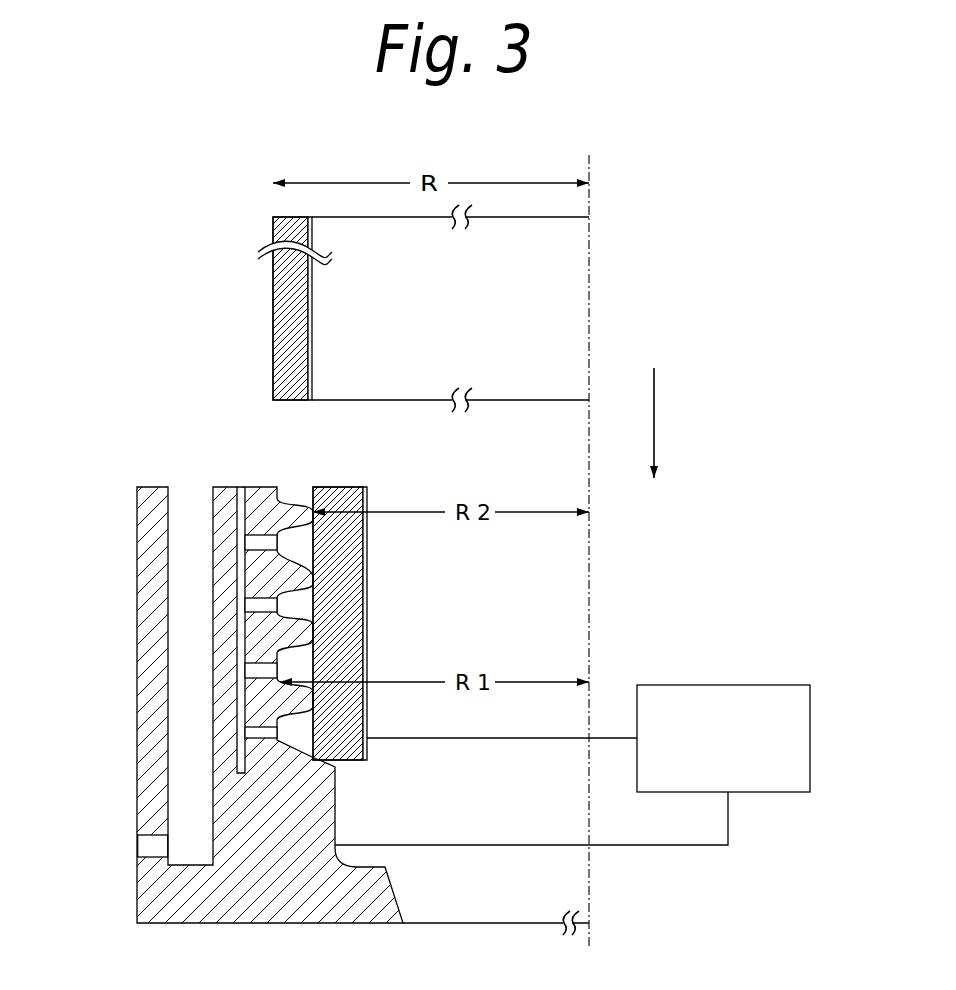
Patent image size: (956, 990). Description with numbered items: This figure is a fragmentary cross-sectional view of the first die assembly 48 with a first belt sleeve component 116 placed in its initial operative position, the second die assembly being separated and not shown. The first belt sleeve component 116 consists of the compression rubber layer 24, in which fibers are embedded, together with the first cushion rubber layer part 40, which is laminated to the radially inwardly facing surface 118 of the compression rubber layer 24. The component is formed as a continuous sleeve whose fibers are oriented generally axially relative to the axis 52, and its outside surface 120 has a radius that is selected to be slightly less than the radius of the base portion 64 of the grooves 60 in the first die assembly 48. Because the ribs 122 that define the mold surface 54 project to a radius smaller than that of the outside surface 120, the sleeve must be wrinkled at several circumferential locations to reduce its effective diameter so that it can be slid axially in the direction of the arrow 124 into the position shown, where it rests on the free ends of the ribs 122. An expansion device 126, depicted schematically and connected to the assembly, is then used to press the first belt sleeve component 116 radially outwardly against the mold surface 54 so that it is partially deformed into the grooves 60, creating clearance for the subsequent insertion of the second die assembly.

The compression rubber layer 24 is at (273, 337).
The first cushion rubber layer part 40 is at (312, 318).
The first die assembly 48 is at (247, 705).
The axis 52 is at (589, 297).
The mold surface 54 is at (278, 593).
The grooves 60 is at (288, 547).
The base portion 64 is at (280, 614).
The first belt sleeve component 116 is at (288, 404).
The radially inwardly facing surface 118 is at (312, 282).
The outside surface 120 is at (273, 368).
The ribs 122 is at (313, 577).
The arrow 124 is at (654, 413).
The expansion device 126 is at (707, 784).